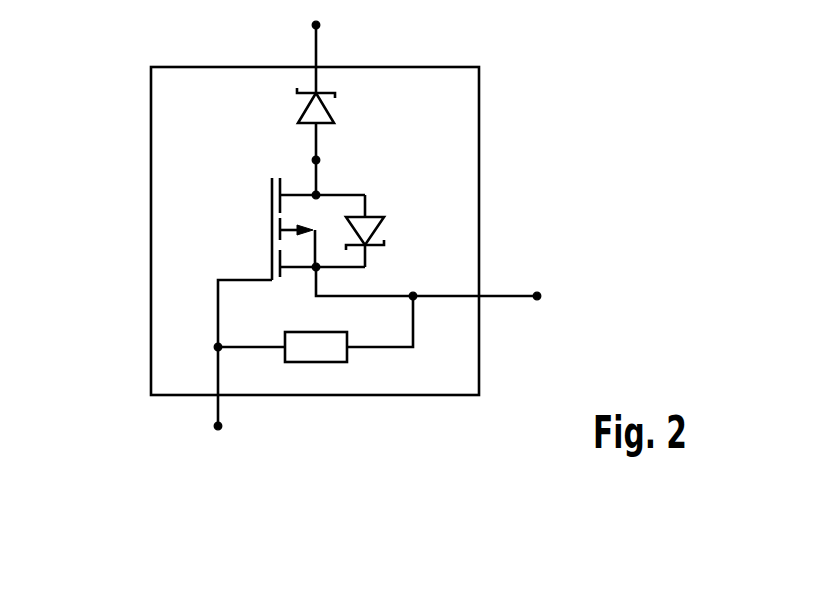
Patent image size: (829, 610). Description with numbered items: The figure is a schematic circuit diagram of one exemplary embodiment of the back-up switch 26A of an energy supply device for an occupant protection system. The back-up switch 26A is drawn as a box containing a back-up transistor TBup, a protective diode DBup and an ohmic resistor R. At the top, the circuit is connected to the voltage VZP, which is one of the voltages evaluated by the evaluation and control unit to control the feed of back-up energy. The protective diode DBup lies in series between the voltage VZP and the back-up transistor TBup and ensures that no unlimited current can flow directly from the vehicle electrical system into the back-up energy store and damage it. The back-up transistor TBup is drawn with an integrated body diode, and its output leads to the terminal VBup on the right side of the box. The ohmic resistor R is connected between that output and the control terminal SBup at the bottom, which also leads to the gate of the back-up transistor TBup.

The back-up switch 26A is at (151, 232).
The voltage VZP is at (341, 50).
The protective diode DBup is at (350, 141).
The back-up transistor TBup is at (315, 262).
The ohmic resistor R is at (313, 329).
The output voltage terminal VBup is at (501, 281).
The control signal terminal SBup is at (248, 399).